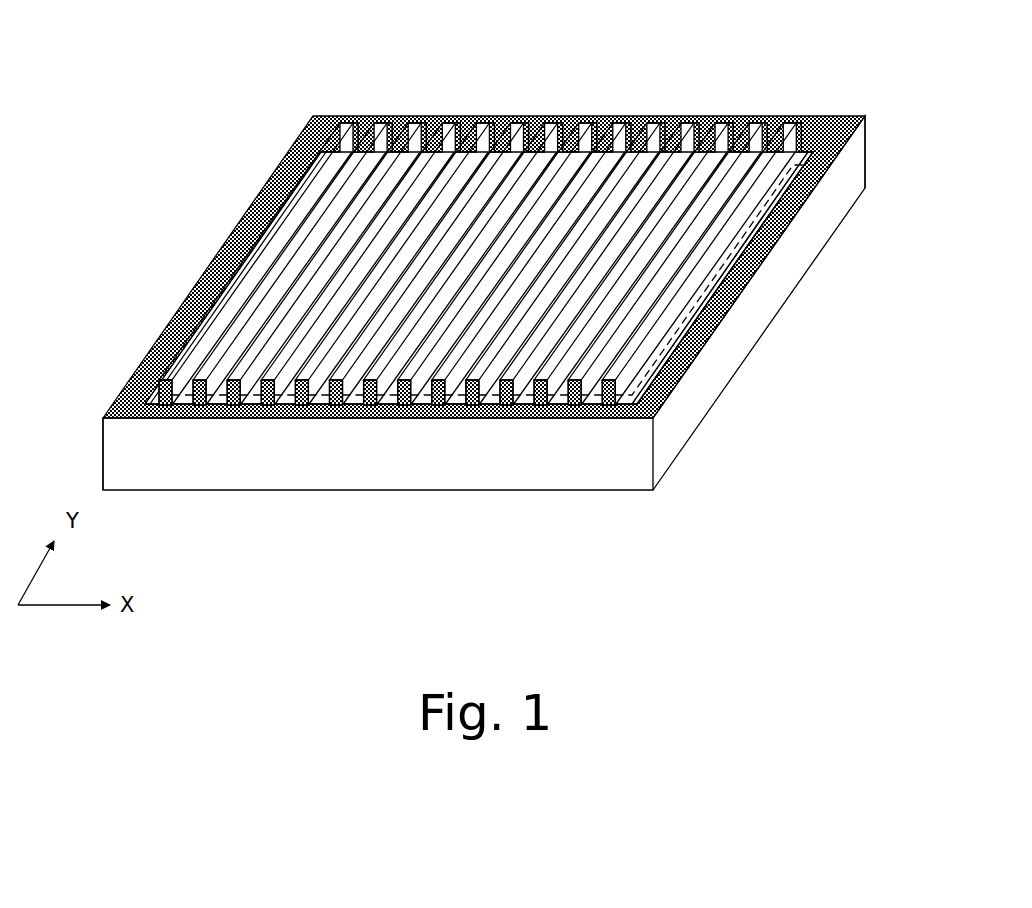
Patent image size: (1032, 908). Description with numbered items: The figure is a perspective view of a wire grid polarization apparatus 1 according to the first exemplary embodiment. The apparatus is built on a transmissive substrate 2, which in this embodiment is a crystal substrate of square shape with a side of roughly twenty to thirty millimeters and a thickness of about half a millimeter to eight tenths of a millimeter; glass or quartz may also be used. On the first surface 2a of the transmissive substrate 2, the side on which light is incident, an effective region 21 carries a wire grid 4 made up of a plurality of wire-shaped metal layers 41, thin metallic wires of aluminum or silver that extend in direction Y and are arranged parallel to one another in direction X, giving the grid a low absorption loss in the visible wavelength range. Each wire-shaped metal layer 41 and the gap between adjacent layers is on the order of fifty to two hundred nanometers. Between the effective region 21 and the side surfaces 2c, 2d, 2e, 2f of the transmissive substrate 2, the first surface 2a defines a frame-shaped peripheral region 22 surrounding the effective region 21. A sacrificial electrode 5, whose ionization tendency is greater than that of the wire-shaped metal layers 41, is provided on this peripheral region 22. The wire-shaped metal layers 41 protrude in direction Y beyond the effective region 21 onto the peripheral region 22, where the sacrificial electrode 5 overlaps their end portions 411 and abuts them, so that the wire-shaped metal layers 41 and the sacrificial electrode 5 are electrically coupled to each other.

The wire grid polarization apparatus 1 is at (481, 301).
The transmissive substrate 2 is at (481, 338).
The first surface 2a is at (712, 288).
The side surface 2c is at (358, 468).
The side surface 2d is at (705, 395).
The side surface 2e is at (866, 137).
The side surface 2f is at (103, 452).
The sacrificial electrode 5 is at (752, 263).
The effective region 21 is at (780, 182).
The peripheral region 22 is at (770, 218).
The wire grid 4 is at (480, 307).
The wire-shaped metal layer 41 is at (480, 307).
The end portion 411 is at (552, 127).